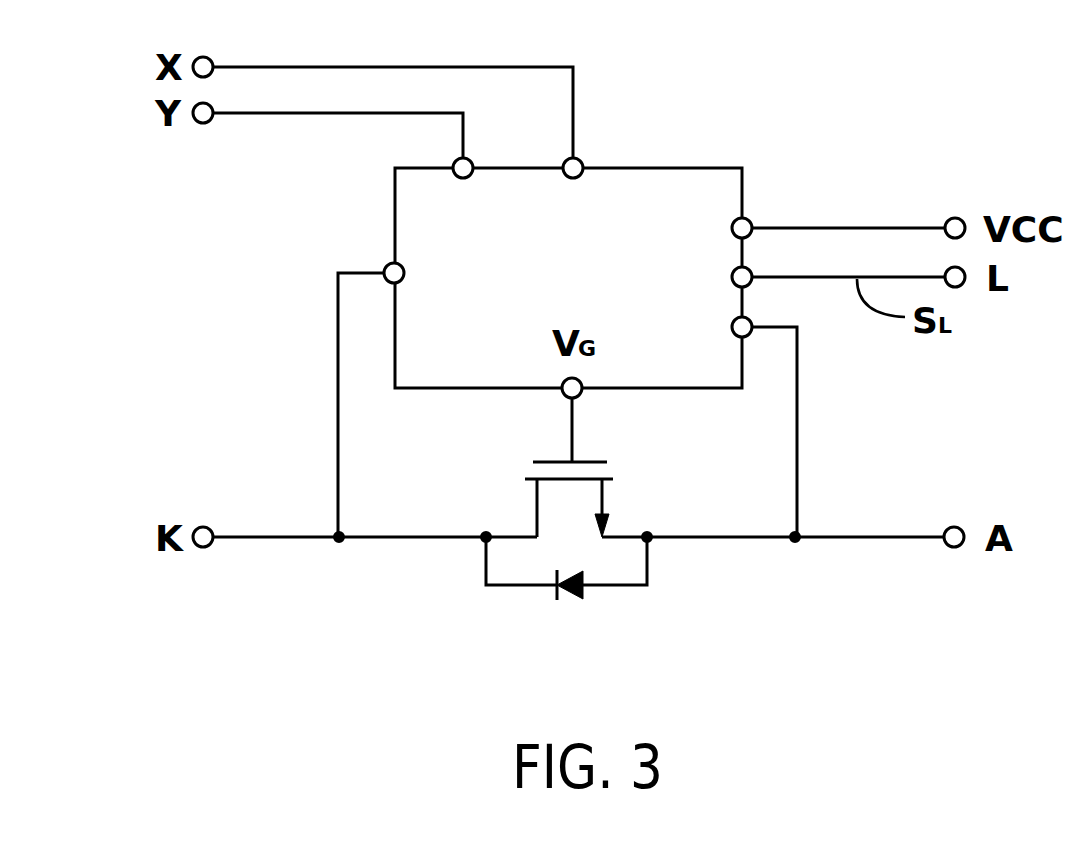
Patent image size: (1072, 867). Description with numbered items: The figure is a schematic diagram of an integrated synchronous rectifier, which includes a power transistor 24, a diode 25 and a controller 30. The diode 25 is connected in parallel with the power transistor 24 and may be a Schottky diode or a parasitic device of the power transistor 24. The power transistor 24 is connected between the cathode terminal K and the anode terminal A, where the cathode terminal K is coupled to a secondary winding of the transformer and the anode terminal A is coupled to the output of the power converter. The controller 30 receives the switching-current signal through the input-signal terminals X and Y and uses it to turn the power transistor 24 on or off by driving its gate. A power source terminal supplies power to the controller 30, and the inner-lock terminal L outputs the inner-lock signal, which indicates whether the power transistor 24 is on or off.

The controller 30 is at (690, 160).
The power transistor 24 is at (620, 490).
The diode 25 is at (572, 603).